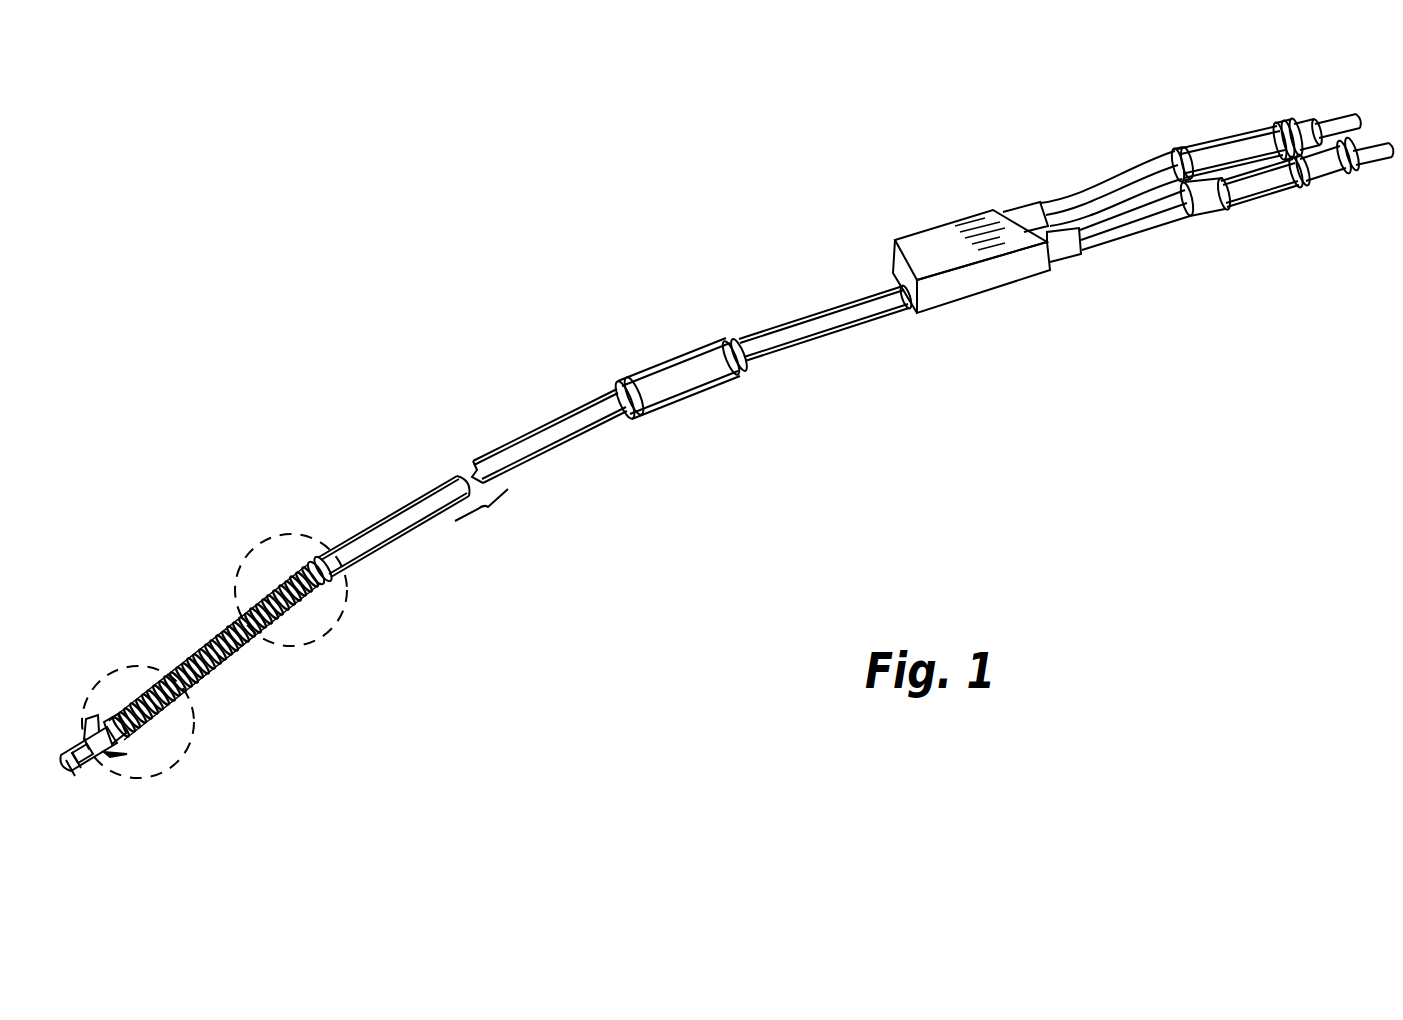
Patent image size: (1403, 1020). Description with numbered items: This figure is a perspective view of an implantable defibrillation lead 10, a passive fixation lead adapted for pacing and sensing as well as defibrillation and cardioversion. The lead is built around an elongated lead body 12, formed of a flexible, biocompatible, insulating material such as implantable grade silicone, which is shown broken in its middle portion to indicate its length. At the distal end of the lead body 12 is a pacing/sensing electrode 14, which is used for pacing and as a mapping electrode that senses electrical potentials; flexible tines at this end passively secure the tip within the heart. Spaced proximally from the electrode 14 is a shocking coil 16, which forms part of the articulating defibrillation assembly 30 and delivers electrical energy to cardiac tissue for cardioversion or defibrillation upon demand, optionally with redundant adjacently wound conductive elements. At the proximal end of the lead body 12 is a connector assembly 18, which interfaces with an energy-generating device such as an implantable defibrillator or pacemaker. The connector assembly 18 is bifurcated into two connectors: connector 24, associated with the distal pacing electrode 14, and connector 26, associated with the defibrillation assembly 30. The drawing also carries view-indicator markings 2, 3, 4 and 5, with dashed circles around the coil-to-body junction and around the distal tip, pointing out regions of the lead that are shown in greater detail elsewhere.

The implantable defibrillation lead 10 is at (597, 257).
The elongated lead body 12 is at (565, 432).
The pacing/sensing electrode 14 is at (90, 772).
The shocking coil 16 is at (222, 668).
The connector assembly 18 is at (967, 284).
The connector 24 is at (1252, 196).
The connector 26 is at (1225, 147).
The articulating defibrillation assembly 30 is at (175, 800).
The detail view FIG. 2 indicator 2 is at (262, 540).
The section view FIG. 3 indicator 3 is at (355, 555).
The detail view FIG. 4 indicator 4 is at (153, 667).
The view FIG. 5 indicator 5 is at (95, 693).